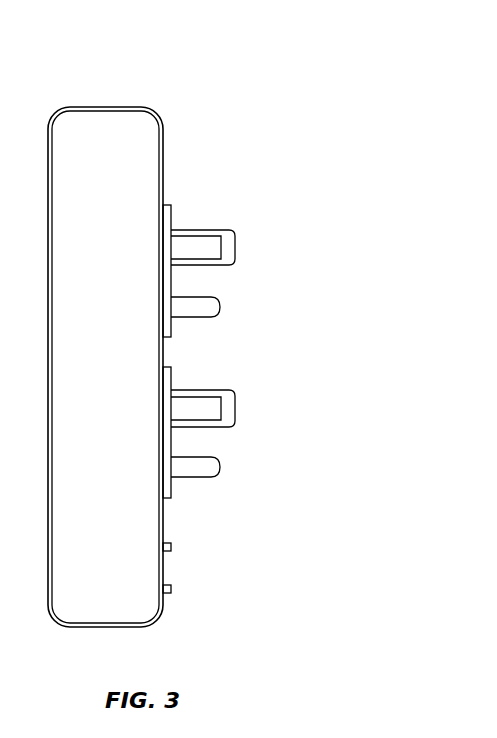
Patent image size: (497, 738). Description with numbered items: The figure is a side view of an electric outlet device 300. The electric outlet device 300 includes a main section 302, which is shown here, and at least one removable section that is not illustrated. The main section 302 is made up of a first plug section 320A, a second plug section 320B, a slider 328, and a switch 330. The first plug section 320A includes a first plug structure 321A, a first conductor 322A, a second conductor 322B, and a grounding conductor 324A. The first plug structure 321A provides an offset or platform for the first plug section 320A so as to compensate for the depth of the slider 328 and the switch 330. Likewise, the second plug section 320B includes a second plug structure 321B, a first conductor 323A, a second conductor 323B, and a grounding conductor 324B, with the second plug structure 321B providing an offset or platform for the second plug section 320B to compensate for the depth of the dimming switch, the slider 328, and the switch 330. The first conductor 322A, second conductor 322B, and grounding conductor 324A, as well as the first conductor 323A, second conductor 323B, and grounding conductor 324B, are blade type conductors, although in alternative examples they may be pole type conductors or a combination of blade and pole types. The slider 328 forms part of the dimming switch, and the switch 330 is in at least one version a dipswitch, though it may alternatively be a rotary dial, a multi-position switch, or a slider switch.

The electric outlet device 300 is at (281, 92).
The main section 302 is at (108, 107).
The first plug section 320A is at (267, 179).
The second plug section 320B is at (242, 511).
The first plug structure 321A is at (165, 205).
The second plug structure 321B is at (165, 367).
The first conductor 322A is at (193, 230).
The second conductor 322B is at (235, 248).
The first conductor 323A is at (193, 427).
The second conductor 323B is at (235, 407).
The grounding conductor 324A is at (220, 307).
The grounding conductor 324B is at (220, 466).
The slider 328 is at (171, 547).
The switch 330 is at (171, 589).